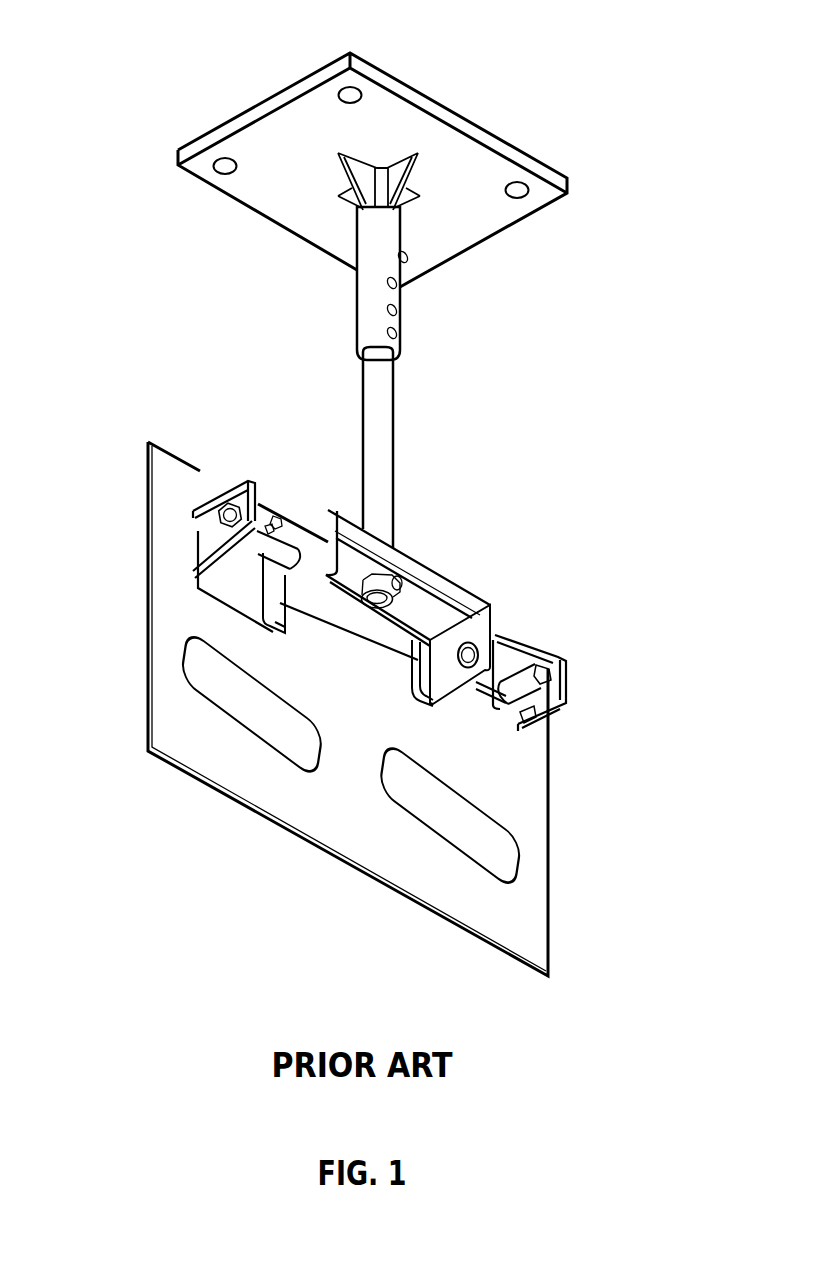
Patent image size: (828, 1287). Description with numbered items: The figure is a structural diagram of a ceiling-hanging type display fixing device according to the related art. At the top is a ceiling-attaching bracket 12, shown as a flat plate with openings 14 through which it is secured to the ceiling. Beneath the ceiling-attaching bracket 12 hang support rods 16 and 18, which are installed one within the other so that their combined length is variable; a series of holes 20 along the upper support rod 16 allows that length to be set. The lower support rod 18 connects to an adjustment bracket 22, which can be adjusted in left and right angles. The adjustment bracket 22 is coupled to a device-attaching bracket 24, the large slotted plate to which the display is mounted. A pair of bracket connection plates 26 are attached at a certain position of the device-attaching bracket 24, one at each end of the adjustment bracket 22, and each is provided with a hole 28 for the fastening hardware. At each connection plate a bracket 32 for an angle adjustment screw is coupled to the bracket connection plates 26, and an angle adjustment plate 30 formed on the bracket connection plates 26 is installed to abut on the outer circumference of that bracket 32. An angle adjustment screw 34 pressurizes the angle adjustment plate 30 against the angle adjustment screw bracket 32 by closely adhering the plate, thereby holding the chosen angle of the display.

The ceiling-attaching bracket 12 is at (262, 198).
The mounting holes 14 is at (228, 167).
The support rod 16 is at (357, 329).
The support rod 18 is at (393, 402).
The height adjustment holes 20 is at (400, 328).
The adjustment bracket 22 is at (452, 584).
The device-attaching bracket 24 is at (167, 550).
The bracket connection plate 26 is at (205, 525).
The bolt holes 28 is at (208, 495).
The angle adjustment plate 30 is at (271, 518).
The bracket for an angle adjustment screw 32 is at (302, 546).
The angle adjustment screw 34 is at (284, 524).